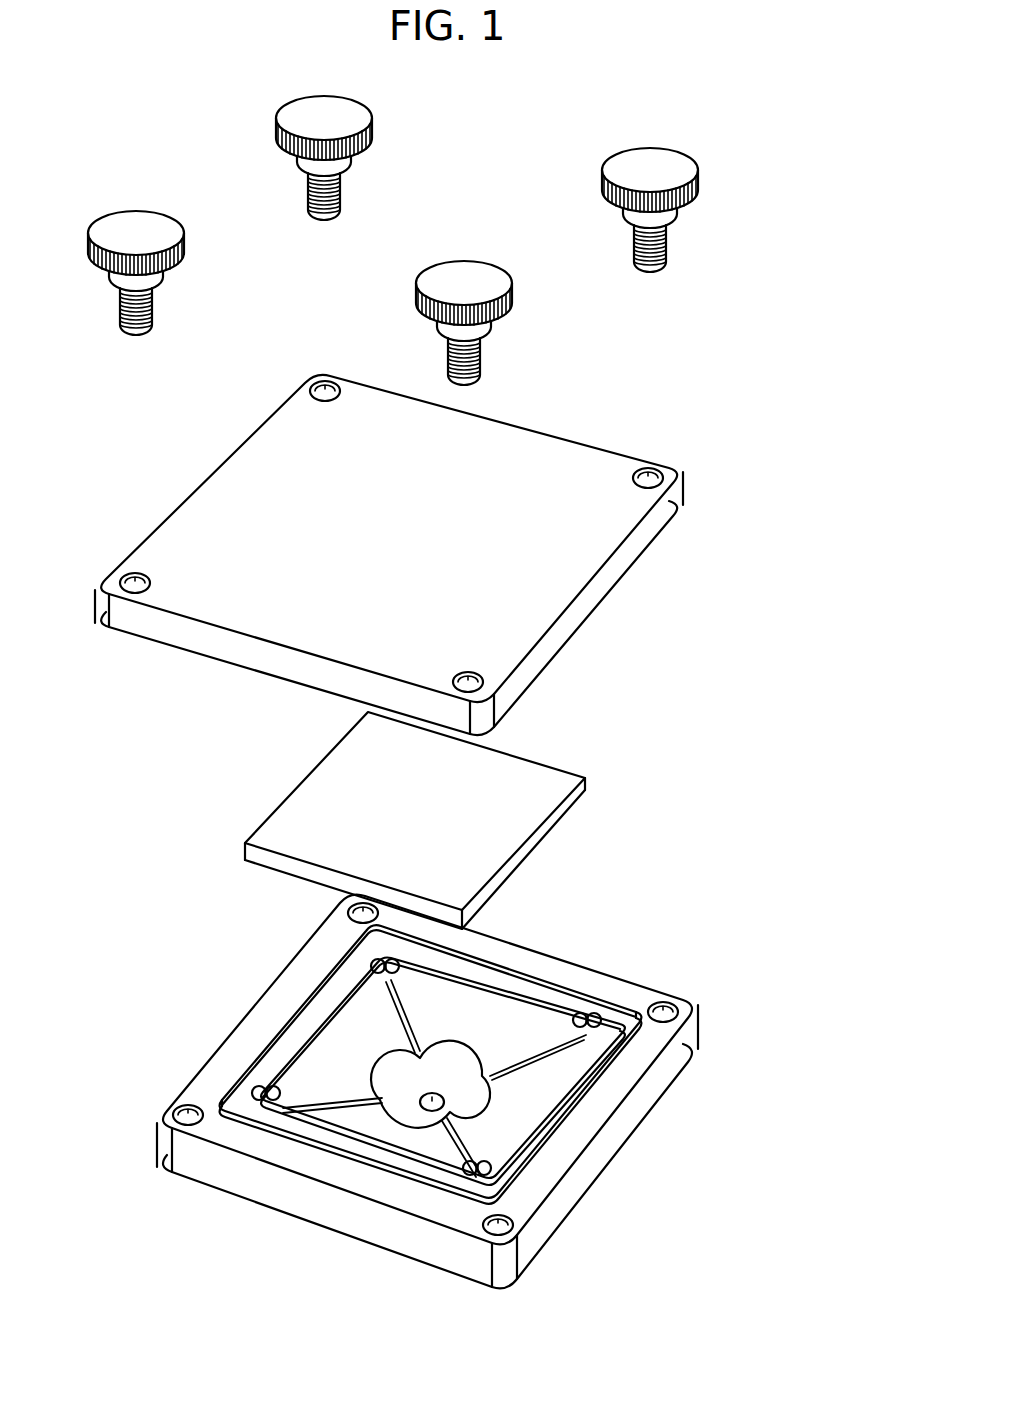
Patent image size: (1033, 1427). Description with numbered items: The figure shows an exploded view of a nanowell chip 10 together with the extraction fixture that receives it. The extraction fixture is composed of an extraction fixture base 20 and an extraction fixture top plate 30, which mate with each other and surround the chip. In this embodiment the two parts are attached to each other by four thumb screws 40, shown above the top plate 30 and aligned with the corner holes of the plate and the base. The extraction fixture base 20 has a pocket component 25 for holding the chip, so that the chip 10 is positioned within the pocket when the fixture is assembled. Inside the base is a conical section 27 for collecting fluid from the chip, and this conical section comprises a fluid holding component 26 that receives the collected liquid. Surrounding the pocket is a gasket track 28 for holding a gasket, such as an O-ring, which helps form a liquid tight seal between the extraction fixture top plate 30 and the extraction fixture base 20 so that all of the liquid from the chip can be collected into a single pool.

The nanowell chip 10 is at (517, 793).
The extraction fixture base 20 is at (485, 1099).
The pocket component 25 is at (320, 1030).
The fluid holding component 26 is at (403, 1110).
The conical section 27 is at (503, 1037).
The gasket track 28 is at (572, 1108).
The extraction fixture top plate 30 is at (600, 500).
The thumb screws 40 is at (672, 167).